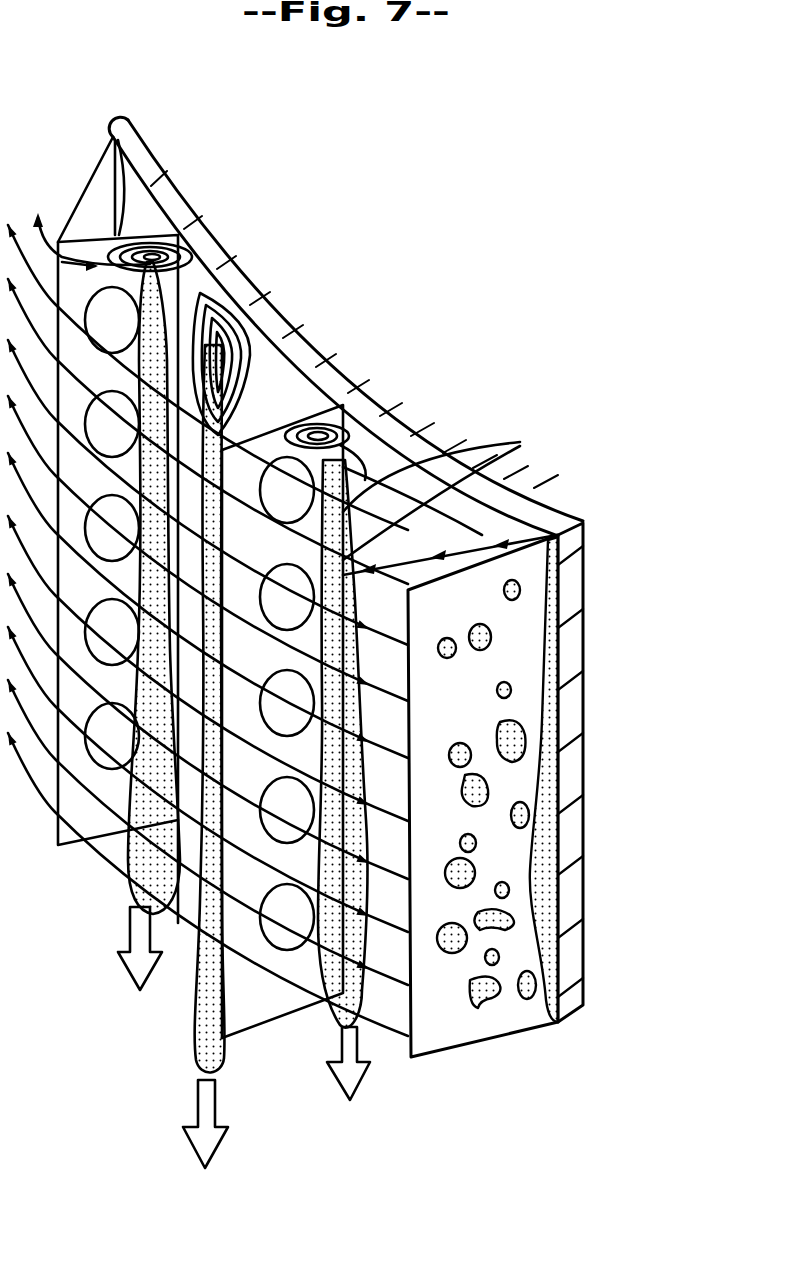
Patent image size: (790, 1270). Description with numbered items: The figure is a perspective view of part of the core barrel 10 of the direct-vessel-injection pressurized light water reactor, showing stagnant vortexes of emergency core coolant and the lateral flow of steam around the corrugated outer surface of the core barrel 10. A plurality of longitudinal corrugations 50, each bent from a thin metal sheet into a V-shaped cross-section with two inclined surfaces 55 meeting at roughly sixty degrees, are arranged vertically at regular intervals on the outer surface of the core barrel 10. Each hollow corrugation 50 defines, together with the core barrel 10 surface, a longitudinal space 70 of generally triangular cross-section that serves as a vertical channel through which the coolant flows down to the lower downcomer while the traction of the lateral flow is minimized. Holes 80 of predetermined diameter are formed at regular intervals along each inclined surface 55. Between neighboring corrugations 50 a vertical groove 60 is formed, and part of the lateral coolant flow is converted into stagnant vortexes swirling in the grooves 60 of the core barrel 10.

The core barrel 10 is at (572, 700).
The longitudinal corrugation 50 is at (308, 395).
The inclined surface 55 is at (78, 185).
The vertical groove 60 is at (195, 290).
The longitudinal space 70 is at (330, 345).
The hole 80 is at (520, 442).